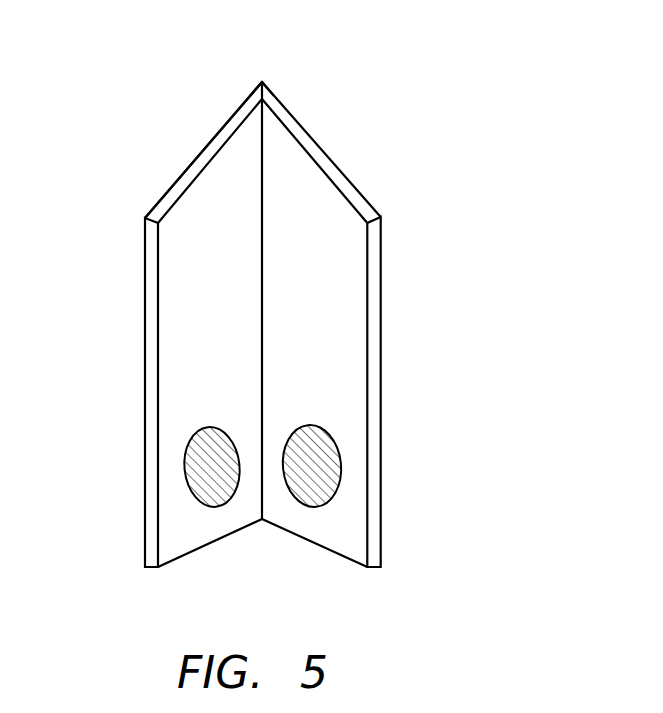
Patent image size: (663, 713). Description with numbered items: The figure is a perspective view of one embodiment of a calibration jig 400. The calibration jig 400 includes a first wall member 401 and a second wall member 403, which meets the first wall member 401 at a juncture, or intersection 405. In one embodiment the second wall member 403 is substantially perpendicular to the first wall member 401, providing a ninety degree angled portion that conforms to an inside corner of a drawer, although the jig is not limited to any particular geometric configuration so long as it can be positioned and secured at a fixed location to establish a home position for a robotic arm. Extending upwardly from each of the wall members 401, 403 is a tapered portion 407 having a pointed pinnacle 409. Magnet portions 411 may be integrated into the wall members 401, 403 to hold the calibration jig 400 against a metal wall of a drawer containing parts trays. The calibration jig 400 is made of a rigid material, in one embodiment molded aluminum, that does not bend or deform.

The calibration jig 400 is at (378, 105).
The first wall member 401 is at (198, 343).
The second wall member 403 is at (343, 323).
The intersection 405 is at (262, 530).
The tapered portion 407 is at (230, 173).
The pointed pinnacle 409 is at (268, 97).
The magnet portions 411 is at (190, 480).